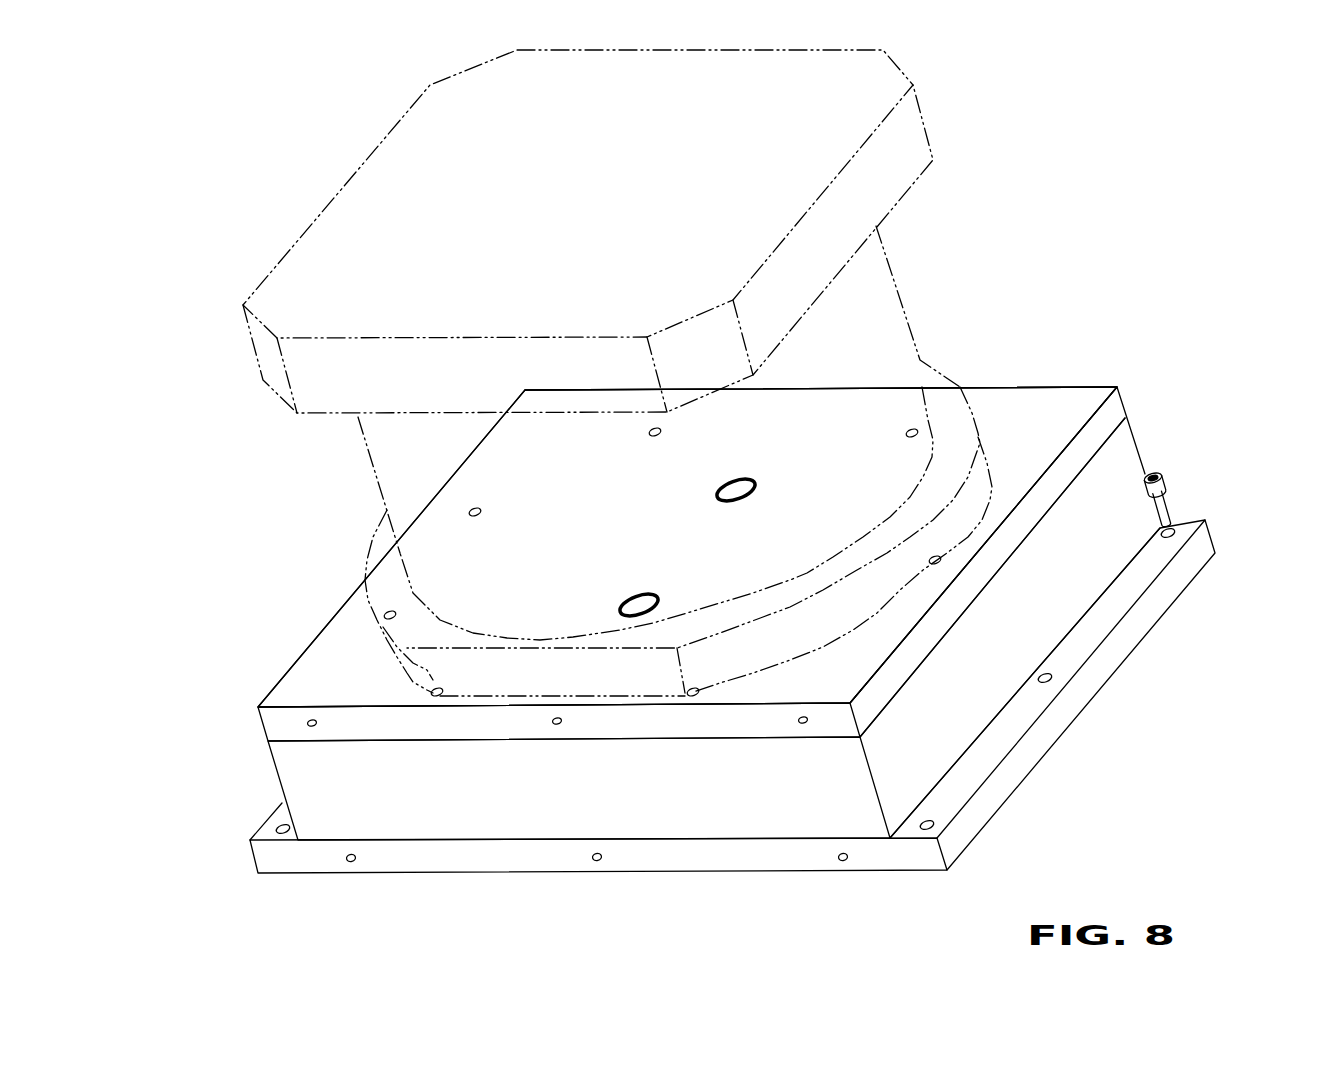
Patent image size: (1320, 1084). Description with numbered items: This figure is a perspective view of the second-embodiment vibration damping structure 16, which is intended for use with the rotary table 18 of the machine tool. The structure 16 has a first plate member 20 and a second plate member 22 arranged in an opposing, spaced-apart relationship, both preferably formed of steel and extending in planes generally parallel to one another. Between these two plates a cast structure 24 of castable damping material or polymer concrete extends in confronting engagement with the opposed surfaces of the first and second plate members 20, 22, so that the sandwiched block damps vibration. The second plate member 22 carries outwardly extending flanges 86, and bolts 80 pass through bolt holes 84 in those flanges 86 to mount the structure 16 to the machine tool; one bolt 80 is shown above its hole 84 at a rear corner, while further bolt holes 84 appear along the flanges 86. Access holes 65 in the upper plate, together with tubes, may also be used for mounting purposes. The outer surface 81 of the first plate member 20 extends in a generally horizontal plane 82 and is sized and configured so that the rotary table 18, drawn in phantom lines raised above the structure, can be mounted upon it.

The vibration damping structure 16 is at (1179, 424).
The rotary table 18 is at (857, 332).
The first plate member 20 is at (1112, 416).
The second plate member 22 is at (1000, 783).
The cast structure 24 is at (953, 698).
The access holes 65 is at (716, 489).
The bolts 80 is at (1170, 498).
The outer surface 81 is at (1030, 408).
The horizontal plane 82 is at (337, 672).
The bolt holes 84 is at (278, 827).
The flanges 86 is at (283, 817).